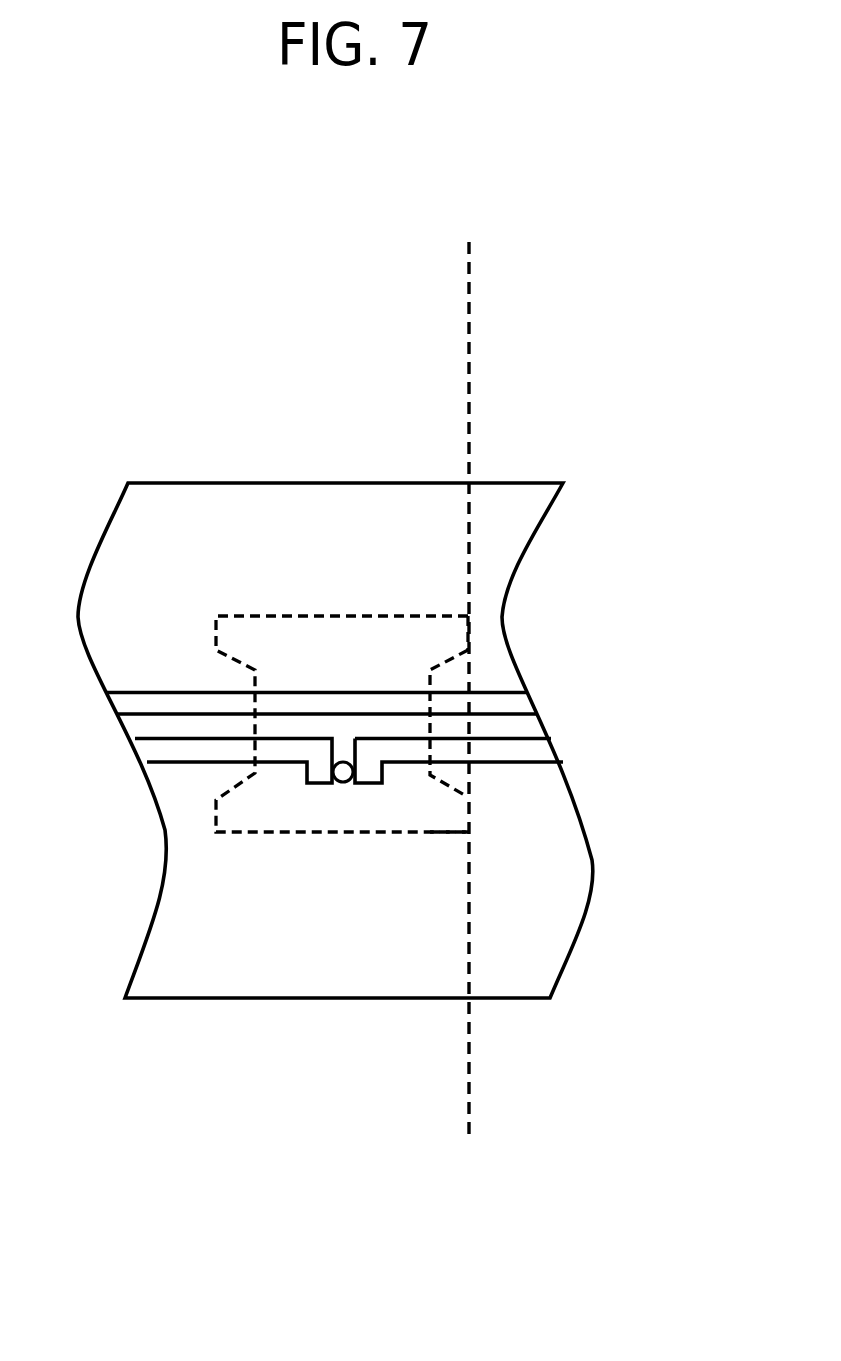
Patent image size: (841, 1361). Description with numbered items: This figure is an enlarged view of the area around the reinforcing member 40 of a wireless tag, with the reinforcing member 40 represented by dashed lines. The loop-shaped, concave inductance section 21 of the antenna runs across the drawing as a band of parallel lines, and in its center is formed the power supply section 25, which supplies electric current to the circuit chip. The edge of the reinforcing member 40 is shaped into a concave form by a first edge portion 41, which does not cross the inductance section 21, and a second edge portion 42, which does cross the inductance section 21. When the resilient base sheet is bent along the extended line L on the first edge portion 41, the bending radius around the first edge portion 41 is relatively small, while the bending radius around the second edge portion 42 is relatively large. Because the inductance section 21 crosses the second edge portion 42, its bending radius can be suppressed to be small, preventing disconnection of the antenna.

The inductance section 21 is at (495, 707).
The power supply section 25 is at (343, 772).
The reinforcing member 40 is at (250, 832).
The first edge portion 41 is at (472, 822).
The second edge portion 42 is at (433, 723).
The extended line L is at (468, 420).